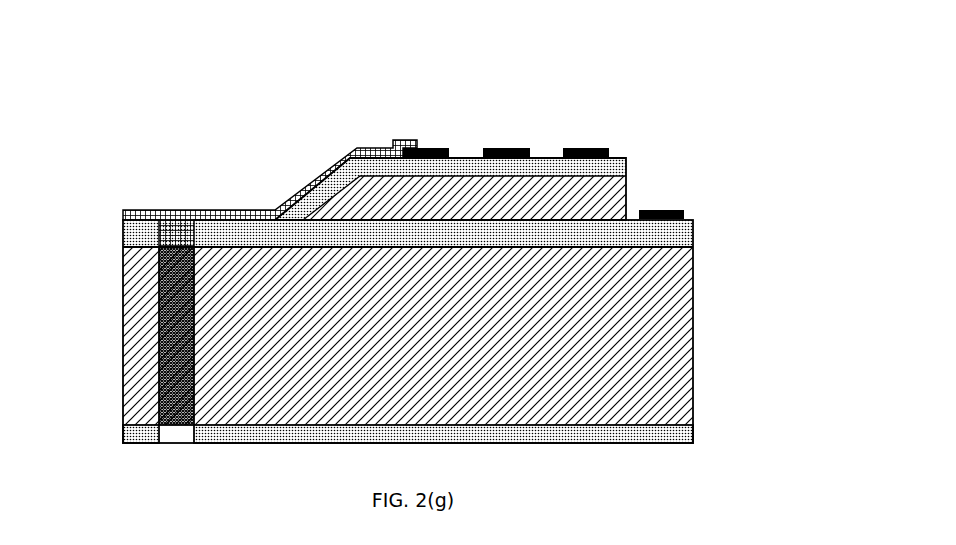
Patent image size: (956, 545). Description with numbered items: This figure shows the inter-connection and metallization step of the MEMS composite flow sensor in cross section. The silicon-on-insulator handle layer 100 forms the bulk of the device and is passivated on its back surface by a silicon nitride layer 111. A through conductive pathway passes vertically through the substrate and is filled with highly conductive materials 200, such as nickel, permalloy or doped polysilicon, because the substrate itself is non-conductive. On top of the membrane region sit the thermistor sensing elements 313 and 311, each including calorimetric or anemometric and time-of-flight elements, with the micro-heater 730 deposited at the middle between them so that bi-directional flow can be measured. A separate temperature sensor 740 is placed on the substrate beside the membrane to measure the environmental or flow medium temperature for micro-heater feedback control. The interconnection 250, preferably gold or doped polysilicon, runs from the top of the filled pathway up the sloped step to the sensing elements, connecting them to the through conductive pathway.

The handle layer 100 is at (641, 330).
The silicon nitride passivation layer 111 is at (687, 436).
The highly conductive materials 200 is at (168, 305).
The interconnection 250 is at (350, 153).
The sensing element 313 is at (427, 148).
The micro-heater 730 is at (512, 148).
The sensing element 311 is at (589, 148).
The temperature sensor 740 is at (678, 209).